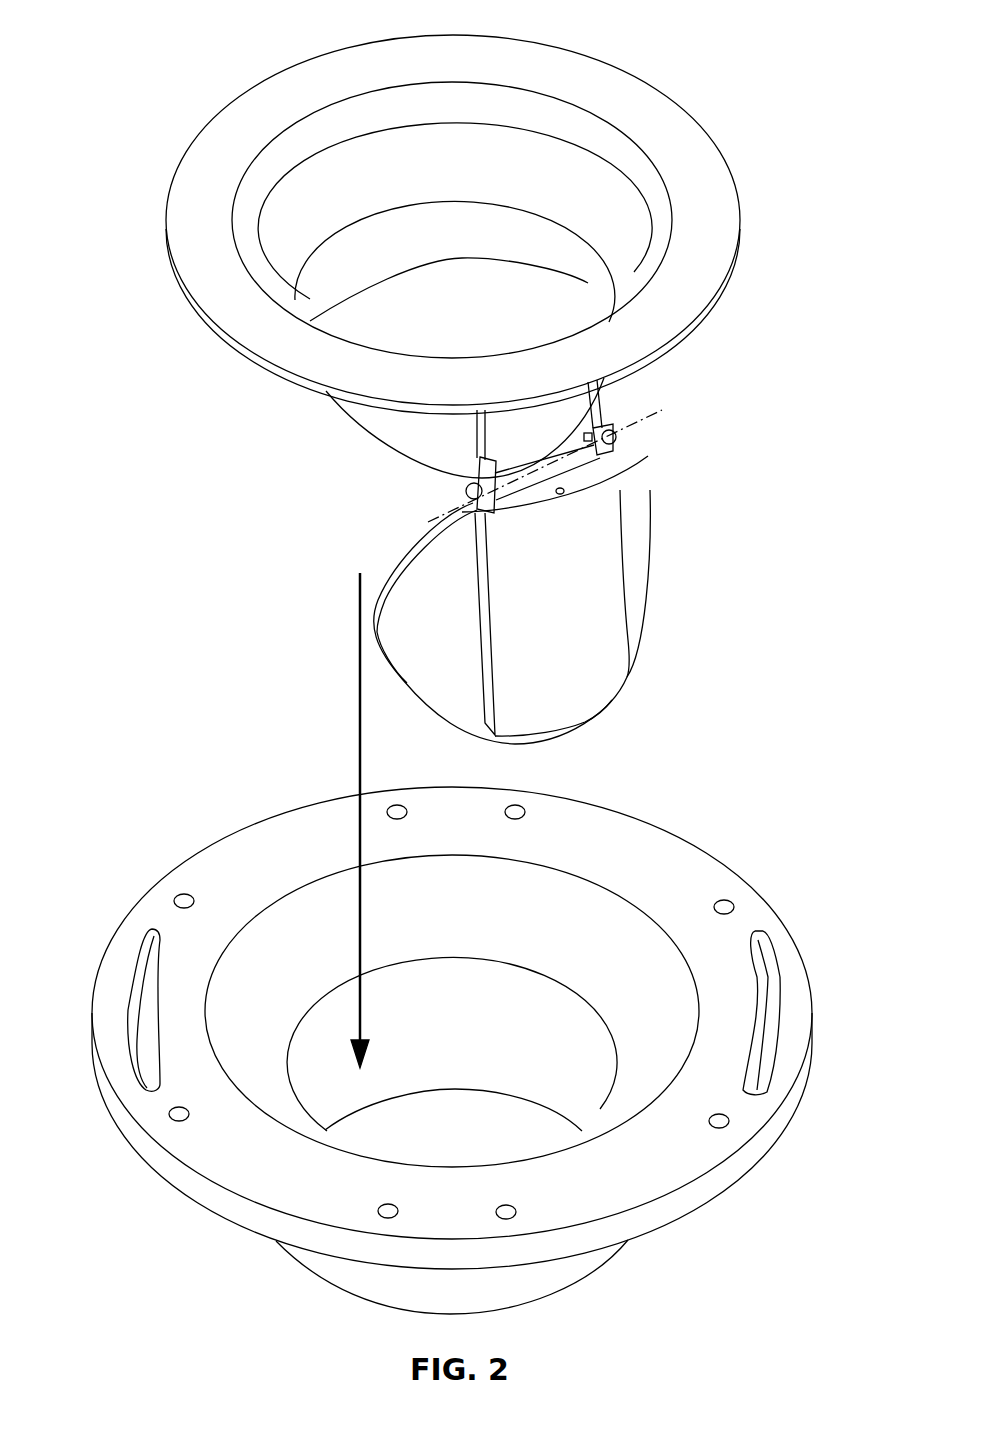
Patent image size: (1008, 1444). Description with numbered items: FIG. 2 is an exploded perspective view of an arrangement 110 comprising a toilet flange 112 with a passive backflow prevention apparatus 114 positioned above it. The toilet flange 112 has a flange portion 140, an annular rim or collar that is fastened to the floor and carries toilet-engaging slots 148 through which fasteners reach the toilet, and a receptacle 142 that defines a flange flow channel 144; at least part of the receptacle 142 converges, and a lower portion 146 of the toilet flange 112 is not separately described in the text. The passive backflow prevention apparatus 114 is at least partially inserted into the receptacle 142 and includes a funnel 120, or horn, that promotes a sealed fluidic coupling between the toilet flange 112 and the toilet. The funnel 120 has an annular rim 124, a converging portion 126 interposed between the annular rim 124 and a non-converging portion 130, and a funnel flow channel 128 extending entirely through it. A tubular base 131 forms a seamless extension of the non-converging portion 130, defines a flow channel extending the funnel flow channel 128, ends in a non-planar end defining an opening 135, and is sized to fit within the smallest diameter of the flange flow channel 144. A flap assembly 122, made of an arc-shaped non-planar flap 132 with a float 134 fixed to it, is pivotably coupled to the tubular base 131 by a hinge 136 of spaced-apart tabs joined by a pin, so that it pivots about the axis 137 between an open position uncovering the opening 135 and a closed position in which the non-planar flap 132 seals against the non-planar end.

The toilet flange assembly 110 is at (232, 56).
The toilet flange 112 is at (762, 893).
The passive backflow prevention apparatus 114 is at (626, 50).
The funnel 120 is at (680, 103).
The flap assembly 122 is at (652, 487).
The annular rim 124 is at (700, 184).
The converging portion 126 is at (490, 110).
The funnel flow channel 128 is at (501, 329).
The non-converging portion 130 is at (390, 425).
The tubular base 131 is at (395, 443).
The non-planar flap 132 is at (462, 700).
The float 134 is at (583, 622).
The opening 135 is at (585, 282).
The hinge 136 is at (620, 437).
The axis 137 is at (660, 407).
The flange portion 140 is at (658, 841).
The receptacle 142 is at (637, 1022).
The flange flow channel 144 is at (475, 1145).
The bowl bottom 146 is at (497, 1284).
The toilet-engaging slots 148 is at (140, 958).